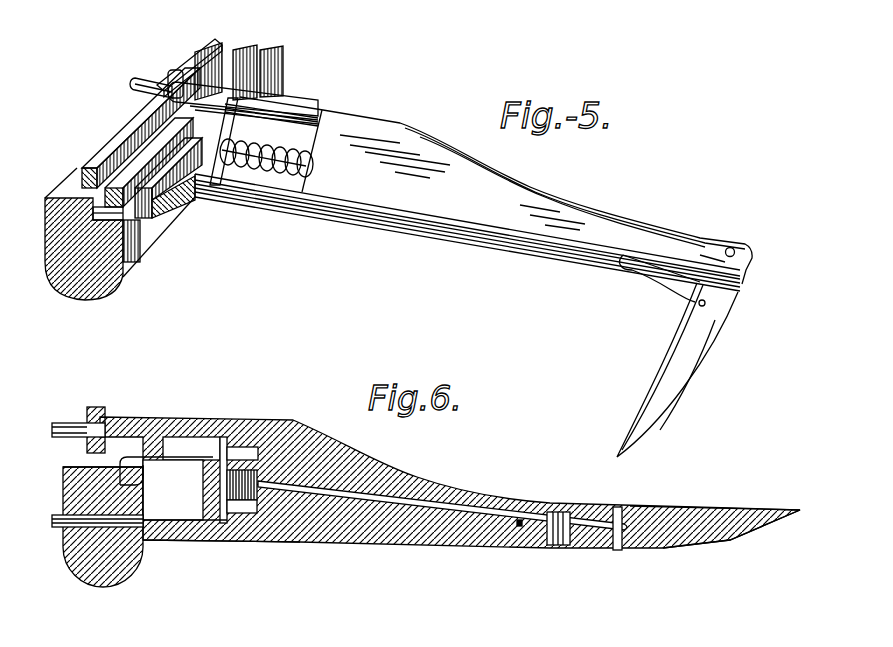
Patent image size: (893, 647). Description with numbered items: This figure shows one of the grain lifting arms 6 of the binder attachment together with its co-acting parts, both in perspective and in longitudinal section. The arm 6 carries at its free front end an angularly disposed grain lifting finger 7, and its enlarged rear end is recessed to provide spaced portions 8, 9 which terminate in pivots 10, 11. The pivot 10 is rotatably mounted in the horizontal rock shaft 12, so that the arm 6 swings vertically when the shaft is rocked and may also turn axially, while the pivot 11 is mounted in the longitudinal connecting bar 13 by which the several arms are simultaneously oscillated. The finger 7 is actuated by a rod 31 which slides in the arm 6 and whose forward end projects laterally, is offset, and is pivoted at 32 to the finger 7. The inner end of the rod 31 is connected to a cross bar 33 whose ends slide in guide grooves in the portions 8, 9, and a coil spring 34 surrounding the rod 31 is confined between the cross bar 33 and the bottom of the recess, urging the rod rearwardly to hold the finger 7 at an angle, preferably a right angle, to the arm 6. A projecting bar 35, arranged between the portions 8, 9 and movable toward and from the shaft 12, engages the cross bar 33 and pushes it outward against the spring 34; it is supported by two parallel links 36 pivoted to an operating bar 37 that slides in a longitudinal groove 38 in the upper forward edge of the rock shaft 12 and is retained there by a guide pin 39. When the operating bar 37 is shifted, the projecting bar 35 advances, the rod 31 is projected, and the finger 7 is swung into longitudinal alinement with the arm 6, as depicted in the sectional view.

In FIG. 5, the grain lifting arm 6 is at (522, 190).
In FIG. 6, the grain lifting arm 6 is at (418, 480).
In FIG. 5, the grain lifting finger 7 is at (682, 387).
In FIG. 6, the grain lifting finger 7 is at (710, 523).
In FIG. 5, the spaced portion 8 is at (260, 193).
In FIG. 6, the spaced portion 8 is at (200, 535).
In FIG. 5, the spaced portion 9 is at (232, 92).
In FIG. 6, the spaced portion 9 is at (219, 455).
In FIG. 6, the pivot 10 is at (60, 525).
In FIG. 5, the pivot 11 is at (151, 78).
In FIG. 6, the pivot 11 is at (68, 428).
In FIG. 5, the rock shaft 12 is at (80, 290).
In FIG. 6, the rock shaft 12 is at (112, 582).
In FIG. 5, the longitudinal connecting bar 13 is at (200, 50).
In FIG. 6, the longitudinal connecting bar 13 is at (98, 407).
In FIG. 5, the rod 31 is at (270, 150).
In FIG. 6, the rod 31 is at (463, 517).
In FIG. 5, the pivot 32 is at (706, 304).
In FIG. 6, the pivot 32 is at (617, 512).
In FIG. 5, the cross bar 33 is at (250, 103).
In FIG. 6, the cross bar 33 is at (240, 450).
In FIG. 5, the coil spring 34 is at (294, 178).
In FIG. 6, the coil spring 34 is at (263, 487).
In FIG. 5, the projecting bar 35 is at (167, 217).
In FIG. 6, the projecting bar 35 is at (233, 527).
In FIG. 6, the parallel link 36 is at (183, 460).
In FIG. 5, the operating bar 37 is at (127, 175).
In FIG. 6, the operating bar 37 is at (113, 473).
In FIG. 5, the guide groove 38 is at (115, 213).
In FIG. 6, the guide groove 38 is at (145, 497).
In FIG. 6, the guide pin 39 is at (143, 477).